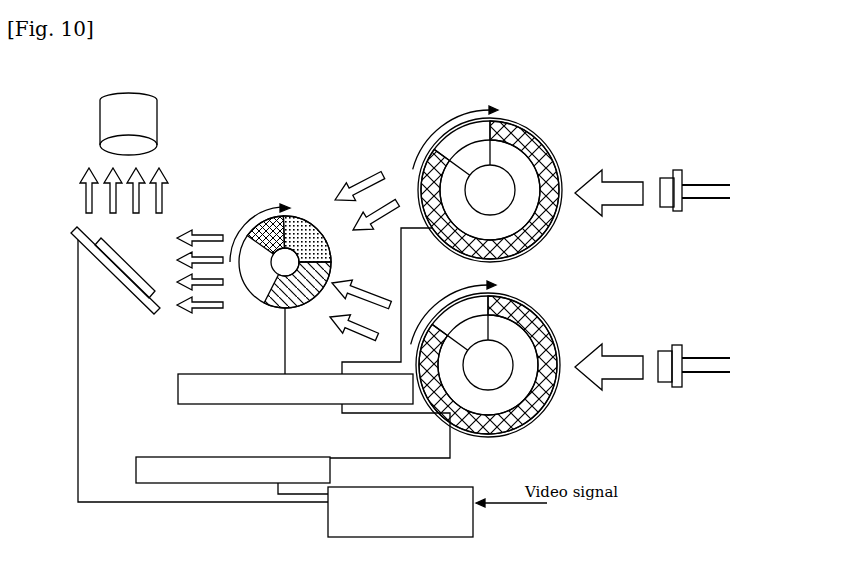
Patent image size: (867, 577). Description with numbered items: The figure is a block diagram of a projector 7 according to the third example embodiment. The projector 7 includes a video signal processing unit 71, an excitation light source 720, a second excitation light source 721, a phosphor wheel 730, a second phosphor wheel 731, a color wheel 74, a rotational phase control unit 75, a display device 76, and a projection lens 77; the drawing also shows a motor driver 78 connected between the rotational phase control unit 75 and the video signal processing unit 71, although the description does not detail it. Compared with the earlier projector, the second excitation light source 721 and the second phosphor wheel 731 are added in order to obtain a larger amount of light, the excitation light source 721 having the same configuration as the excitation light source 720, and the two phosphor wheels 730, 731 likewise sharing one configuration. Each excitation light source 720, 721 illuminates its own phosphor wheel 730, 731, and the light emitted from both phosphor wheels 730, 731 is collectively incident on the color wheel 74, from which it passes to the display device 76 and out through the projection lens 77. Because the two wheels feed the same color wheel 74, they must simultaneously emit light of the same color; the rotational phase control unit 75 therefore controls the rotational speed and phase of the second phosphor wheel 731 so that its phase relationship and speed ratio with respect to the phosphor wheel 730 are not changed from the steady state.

The projector 7 is at (698, 129).
The video signal processing unit 71 is at (476, 508).
The excitation light source 720 is at (677, 345).
The excitation light source 721 is at (677, 210).
The phosphor wheel 730 is at (485, 373).
The phosphor wheel 731 is at (522, 138).
The color wheel 74 is at (300, 229).
The rotational phase control unit 75 is at (207, 374).
The display device 76 is at (93, 270).
The projection lens 77 is at (148, 113).
The motor driver 78 is at (160, 457).